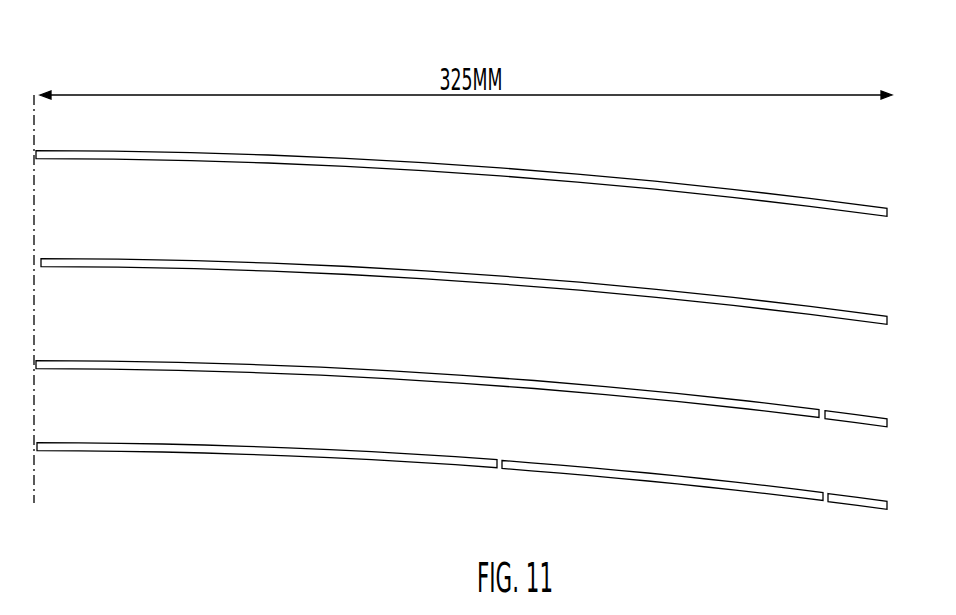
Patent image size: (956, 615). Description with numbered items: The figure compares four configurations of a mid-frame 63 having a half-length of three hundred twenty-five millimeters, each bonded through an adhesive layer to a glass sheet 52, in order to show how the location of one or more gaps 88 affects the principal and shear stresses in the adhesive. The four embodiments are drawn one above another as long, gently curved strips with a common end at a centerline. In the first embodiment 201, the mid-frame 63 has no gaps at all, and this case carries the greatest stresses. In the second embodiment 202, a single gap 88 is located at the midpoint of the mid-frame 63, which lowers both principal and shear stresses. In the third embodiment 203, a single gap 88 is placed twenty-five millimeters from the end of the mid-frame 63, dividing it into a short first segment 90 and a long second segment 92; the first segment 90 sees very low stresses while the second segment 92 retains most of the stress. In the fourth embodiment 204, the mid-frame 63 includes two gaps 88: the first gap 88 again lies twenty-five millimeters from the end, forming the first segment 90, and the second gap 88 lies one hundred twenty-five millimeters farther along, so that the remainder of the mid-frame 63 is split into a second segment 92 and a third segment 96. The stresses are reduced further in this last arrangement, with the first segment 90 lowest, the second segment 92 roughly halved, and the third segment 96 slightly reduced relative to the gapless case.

The first embodiment 201 is at (203, 137).
The second embodiment 202 is at (190, 245).
The third embodiment 203 is at (213, 345).
The fourth embodiment 204 is at (173, 433).
The glass sheet 52 is at (587, 184).
The mid-frame 63 is at (697, 185).
The gap 88 is at (40, 253).
The first segment 90 is at (853, 420).
The second segment 92 is at (651, 390).
The third segment 96 is at (387, 457).